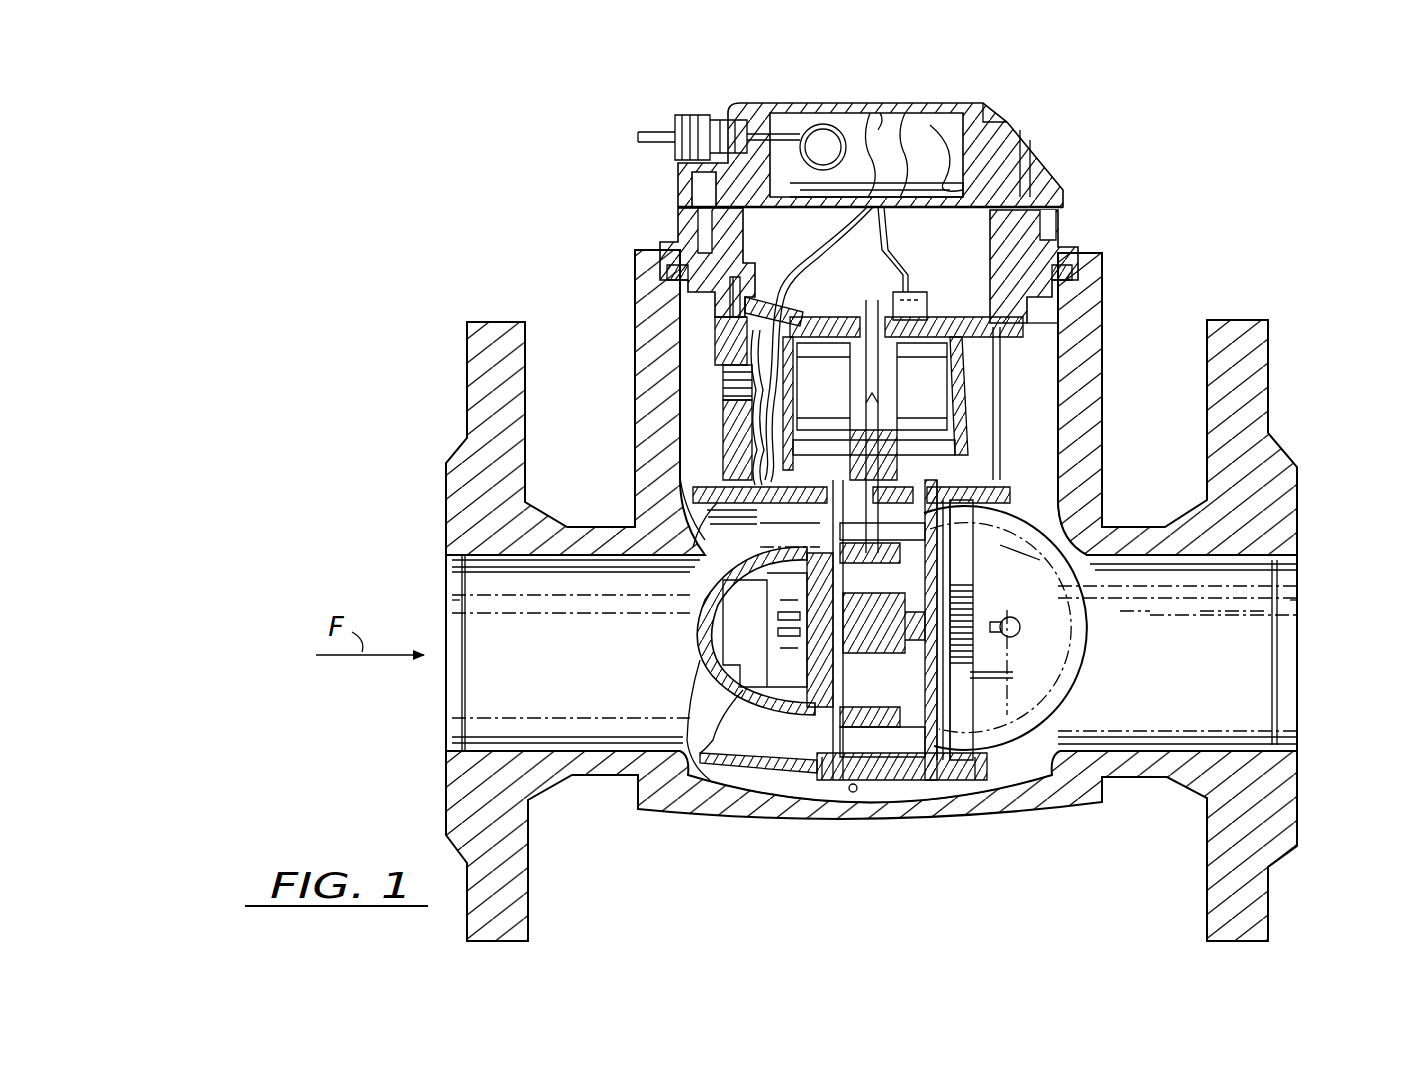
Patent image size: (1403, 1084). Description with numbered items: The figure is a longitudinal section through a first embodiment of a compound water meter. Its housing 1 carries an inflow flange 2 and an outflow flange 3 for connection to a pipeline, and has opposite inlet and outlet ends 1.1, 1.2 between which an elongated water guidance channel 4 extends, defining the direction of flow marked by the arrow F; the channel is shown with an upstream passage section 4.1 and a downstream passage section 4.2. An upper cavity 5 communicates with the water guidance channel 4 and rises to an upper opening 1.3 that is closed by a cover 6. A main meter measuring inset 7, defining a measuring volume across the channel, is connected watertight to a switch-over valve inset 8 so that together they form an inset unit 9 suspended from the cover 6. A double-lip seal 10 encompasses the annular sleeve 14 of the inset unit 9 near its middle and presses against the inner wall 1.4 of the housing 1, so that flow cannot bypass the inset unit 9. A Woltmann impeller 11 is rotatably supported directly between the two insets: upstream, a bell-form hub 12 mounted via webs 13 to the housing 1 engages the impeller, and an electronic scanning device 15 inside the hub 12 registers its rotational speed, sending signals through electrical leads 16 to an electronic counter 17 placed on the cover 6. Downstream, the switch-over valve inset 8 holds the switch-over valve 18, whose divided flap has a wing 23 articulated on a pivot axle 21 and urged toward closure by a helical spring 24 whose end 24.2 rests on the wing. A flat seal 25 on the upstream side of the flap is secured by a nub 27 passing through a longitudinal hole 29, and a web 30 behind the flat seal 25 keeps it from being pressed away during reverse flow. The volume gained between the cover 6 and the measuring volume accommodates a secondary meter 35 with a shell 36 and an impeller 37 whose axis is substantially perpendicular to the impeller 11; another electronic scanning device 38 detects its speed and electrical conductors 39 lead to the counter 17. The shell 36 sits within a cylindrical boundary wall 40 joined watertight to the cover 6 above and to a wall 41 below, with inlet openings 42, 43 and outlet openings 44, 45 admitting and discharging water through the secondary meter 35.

The housing 1 is at (1047, 803).
The inlet end 1.1 is at (451, 712).
The outlet end 1.2 is at (1293, 664).
The upper opening 1.3 is at (1045, 310).
The inner wall 1.4 is at (830, 780).
The inflow flange 2 is at (480, 923).
The outflow flange 3 is at (1264, 905).
The water guidance channel 4 is at (516, 570).
The inlet passage section 4.1 is at (586, 672).
The outlet passage section 4.2 is at (1236, 674).
The upper cavity 5 is at (1040, 343).
The cover 6 is at (1035, 255).
The main meter measuring inset 7 is at (697, 487).
The switch-over valve inset 8 is at (980, 780).
The inset unit 9 is at (823, 783).
The double-lip seal 10 is at (912, 770).
The impeller 11 is at (877, 740).
The bell-form hub 12 is at (696, 615).
The webs 13 is at (757, 733).
The annular sleeve 14 is at (853, 792).
The electronic scanning device 15 is at (777, 670).
The electrical leads 16 is at (806, 240).
The electronic counter 17 is at (953, 133).
The switch-over valve 18 is at (1040, 513).
The pivot axle 21 is at (960, 548).
The wing 23 is at (1098, 631).
The helical spring 24 is at (973, 647).
The spring end 24.2 is at (1057, 704).
The flat seal 25 is at (1192, 610).
The nub 27 is at (1082, 612).
The longitudinal hole 29 is at (1065, 668).
The web 30 is at (930, 565).
The secondary meter 35 is at (977, 395).
The shell 36 is at (963, 413).
The impeller 37 is at (940, 410).
The electronic scanning device 38 is at (907, 298).
The electrical conductors 39 is at (897, 235).
The cylindrical boundary wall 40 is at (1000, 362).
The wall 41 is at (720, 482).
The inlet opening 42 is at (735, 383).
The inlet opening 43 is at (757, 370).
The outlet opening 44 is at (930, 455).
The outlet opening 45 is at (960, 477).